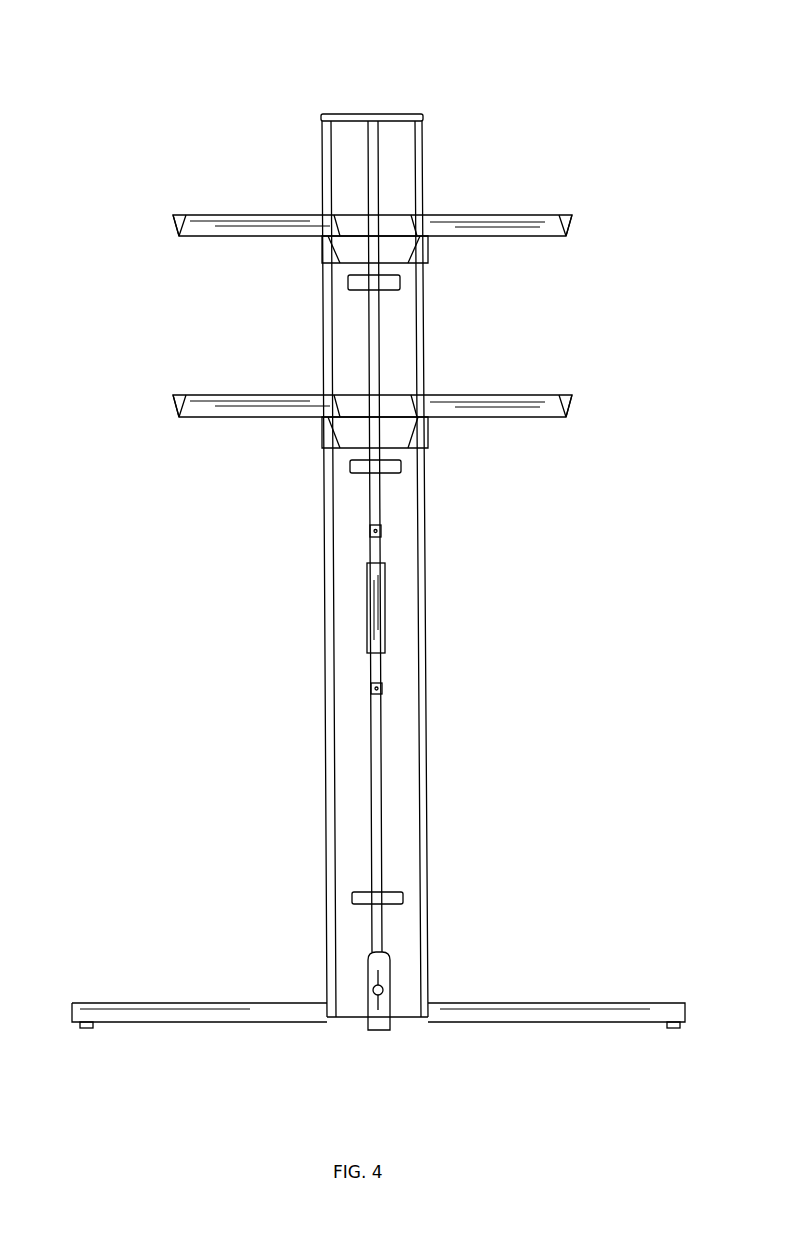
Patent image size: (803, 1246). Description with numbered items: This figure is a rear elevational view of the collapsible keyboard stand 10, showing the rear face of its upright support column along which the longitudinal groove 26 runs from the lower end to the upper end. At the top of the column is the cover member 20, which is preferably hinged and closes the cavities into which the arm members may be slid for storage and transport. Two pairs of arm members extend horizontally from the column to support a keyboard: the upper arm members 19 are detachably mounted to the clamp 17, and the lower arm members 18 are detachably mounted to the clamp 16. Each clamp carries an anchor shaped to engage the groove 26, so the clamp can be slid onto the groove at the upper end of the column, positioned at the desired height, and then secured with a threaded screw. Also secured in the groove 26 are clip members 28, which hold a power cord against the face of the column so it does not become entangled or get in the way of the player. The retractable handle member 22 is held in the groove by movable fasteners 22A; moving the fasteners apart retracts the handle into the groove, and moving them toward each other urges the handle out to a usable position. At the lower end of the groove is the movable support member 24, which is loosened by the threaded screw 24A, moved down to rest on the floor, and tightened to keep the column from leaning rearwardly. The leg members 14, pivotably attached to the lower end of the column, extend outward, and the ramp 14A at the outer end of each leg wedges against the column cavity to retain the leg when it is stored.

The collapsible keyboard stand 10 is at (232, 60).
The cover member 20 is at (403, 115).
The longitudinal groove 26 is at (383, 818).
The arm members 19 is at (218, 215).
The clamp 17 is at (418, 255).
The arm members 18 is at (222, 395).
The clamp 16 is at (423, 440).
The clip members 28 is at (400, 290).
The fasteners 22A is at (382, 530).
The retractable handle member 22 is at (385, 605).
The movable support member 24 is at (395, 1029).
The threaded screw 24A is at (383, 987).
The leg members 14 is at (185, 1003).
The ramp 14A is at (102, 1025).